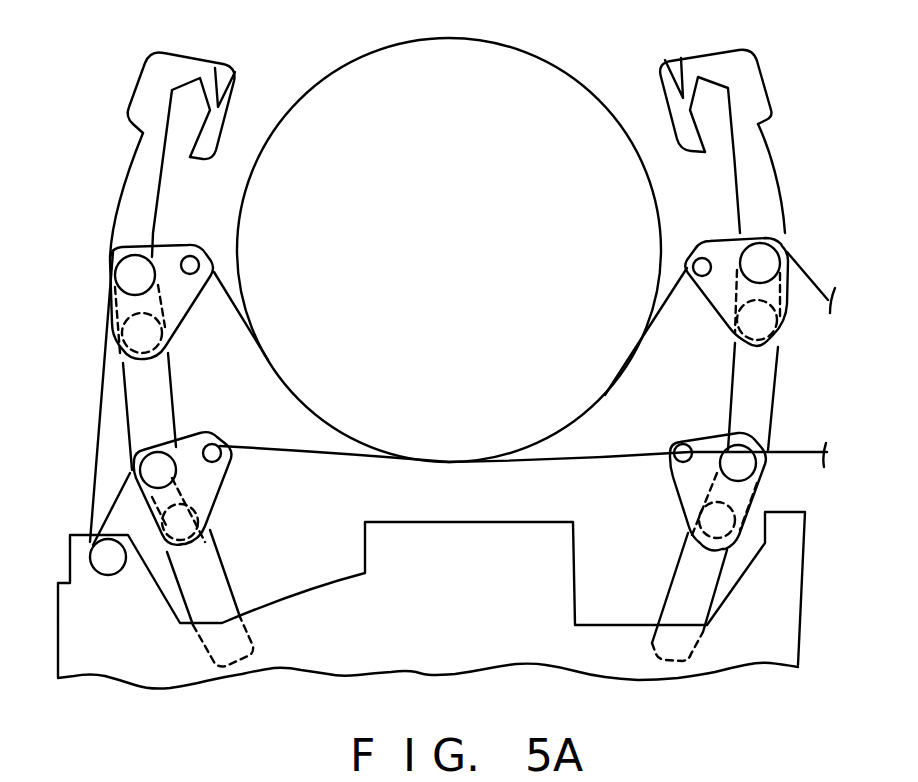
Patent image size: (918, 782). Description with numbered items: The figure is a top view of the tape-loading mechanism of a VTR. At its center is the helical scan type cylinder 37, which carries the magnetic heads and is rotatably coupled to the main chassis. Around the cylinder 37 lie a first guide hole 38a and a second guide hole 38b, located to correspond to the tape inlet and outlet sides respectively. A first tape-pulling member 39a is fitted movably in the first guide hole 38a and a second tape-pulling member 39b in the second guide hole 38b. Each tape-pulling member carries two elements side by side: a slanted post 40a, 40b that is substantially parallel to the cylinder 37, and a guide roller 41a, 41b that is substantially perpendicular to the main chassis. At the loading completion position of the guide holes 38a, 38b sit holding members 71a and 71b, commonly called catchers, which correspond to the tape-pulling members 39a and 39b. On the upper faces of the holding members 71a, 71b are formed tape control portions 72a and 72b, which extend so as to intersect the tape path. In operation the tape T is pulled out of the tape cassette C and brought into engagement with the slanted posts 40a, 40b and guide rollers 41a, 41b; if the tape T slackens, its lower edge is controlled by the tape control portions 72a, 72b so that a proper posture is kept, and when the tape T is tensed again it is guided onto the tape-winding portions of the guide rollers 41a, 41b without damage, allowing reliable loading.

The helical scan type cylinder 37 is at (528, 77).
The first guide hole 38a is at (171, 369).
The second guide hole 38b is at (772, 365).
The first tape-pulling member 39a is at (200, 500).
The second tape-pulling member 39b is at (685, 492).
The slanted post 40a is at (225, 447).
The slanted post 40b is at (680, 456).
The guide roller 41a is at (153, 468).
The guide roller 41b is at (740, 465).
The holding member 71a is at (190, 62).
The holding member 71b is at (705, 50).
The tape control portion 72a is at (233, 67).
The tape control portion 72b is at (670, 62).
The tape T is at (624, 450).
The tape cassette C is at (96, 690).